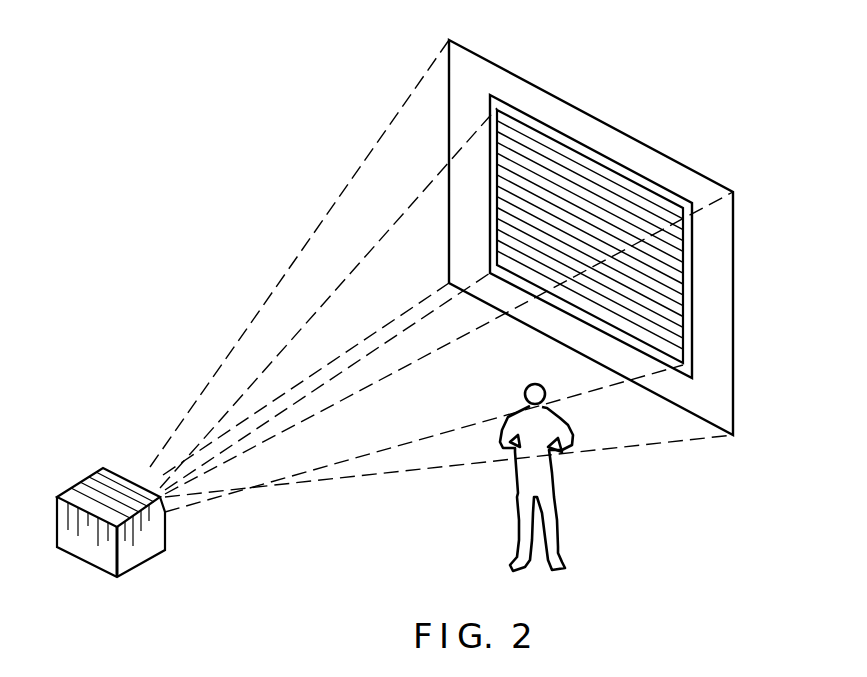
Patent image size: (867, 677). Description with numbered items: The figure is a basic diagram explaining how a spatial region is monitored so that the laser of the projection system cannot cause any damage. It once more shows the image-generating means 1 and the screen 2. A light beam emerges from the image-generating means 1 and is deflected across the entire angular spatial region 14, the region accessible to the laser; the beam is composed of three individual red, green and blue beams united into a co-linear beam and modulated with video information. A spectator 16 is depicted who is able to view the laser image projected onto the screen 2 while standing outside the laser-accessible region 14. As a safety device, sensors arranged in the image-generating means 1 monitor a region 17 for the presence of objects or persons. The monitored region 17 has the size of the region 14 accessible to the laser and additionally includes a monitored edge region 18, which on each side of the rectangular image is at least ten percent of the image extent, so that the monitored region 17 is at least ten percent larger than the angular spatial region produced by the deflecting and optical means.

The image-generating means 1 is at (97, 483).
The screen 2 is at (597, 165).
The angular spatial region 14 is at (338, 375).
The spectator 16 is at (519, 505).
The monitored region 17 is at (351, 398).
The monitored edge region 18 is at (723, 333).